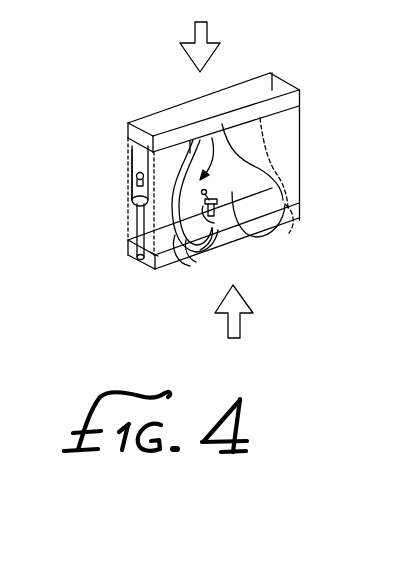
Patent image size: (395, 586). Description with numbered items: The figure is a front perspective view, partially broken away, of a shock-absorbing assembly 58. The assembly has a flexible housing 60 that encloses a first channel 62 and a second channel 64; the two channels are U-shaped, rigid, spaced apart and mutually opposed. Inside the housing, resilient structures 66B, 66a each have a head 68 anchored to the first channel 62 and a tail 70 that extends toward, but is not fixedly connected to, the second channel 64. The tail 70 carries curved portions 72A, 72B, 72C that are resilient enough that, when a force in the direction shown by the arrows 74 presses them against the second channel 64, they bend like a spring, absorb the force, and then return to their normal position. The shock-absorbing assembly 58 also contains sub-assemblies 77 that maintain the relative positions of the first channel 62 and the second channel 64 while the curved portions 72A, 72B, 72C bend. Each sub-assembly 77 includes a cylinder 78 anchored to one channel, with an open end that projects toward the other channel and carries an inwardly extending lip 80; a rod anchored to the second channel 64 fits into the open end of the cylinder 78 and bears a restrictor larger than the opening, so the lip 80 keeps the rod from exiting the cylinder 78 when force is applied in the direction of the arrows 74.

The shock-absorbing assembly 58 is at (108, 103).
The flexible housing 60 is at (292, 122).
The first channel 62 is at (253, 73).
The second channel 64 is at (281, 212).
The resilient structure 66B is at (212, 138).
The resilient structure 66a is at (283, 172).
The head 68 is at (189, 152).
The tail 70 is at (221, 233).
The curved portion 72A is at (191, 258).
The curved portion 72B is at (186, 262).
The curved portion 72C is at (151, 255).
The arrows 74 is at (227, 179).
The sub-assembly 77 is at (112, 194).
The cylinder 78 is at (130, 157).
The inwardly extending lip 80 is at (137, 217).